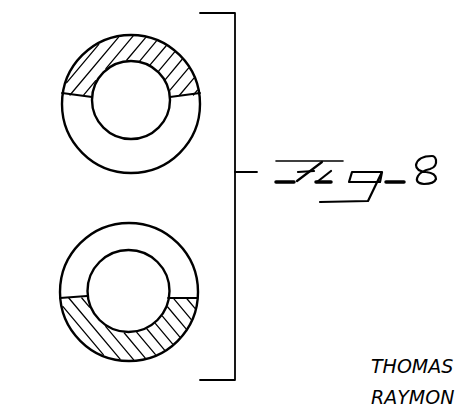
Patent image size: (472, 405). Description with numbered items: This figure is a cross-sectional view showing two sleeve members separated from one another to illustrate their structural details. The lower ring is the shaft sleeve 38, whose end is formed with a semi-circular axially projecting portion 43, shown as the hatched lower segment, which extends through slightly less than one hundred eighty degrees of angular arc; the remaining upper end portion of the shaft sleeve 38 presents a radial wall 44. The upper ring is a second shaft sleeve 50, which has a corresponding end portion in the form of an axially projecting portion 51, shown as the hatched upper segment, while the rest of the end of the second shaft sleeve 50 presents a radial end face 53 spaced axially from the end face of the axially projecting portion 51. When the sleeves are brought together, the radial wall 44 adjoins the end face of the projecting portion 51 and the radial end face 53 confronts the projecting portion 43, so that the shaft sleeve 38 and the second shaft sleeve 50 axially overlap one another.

The shaft sleeve 38 is at (65, 262).
The semi-circular axially projecting portion 43 is at (82, 323).
The radial wall 44 is at (165, 252).
The second shaft sleeve 50 is at (98, 43).
The axially projecting portion 51 is at (148, 51).
The radial end face 53 is at (87, 143).